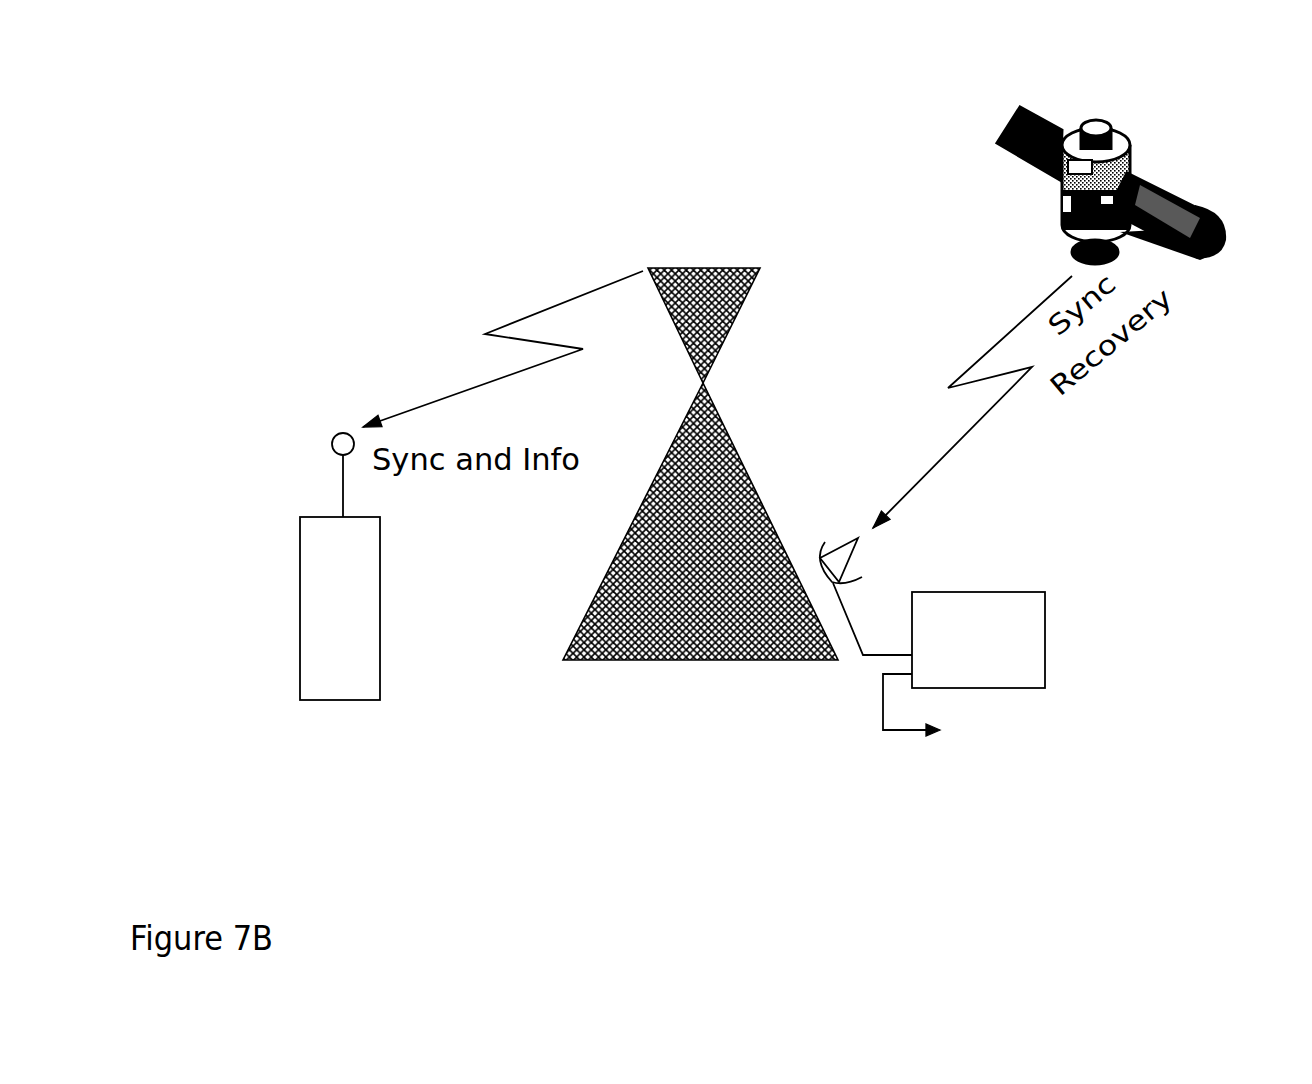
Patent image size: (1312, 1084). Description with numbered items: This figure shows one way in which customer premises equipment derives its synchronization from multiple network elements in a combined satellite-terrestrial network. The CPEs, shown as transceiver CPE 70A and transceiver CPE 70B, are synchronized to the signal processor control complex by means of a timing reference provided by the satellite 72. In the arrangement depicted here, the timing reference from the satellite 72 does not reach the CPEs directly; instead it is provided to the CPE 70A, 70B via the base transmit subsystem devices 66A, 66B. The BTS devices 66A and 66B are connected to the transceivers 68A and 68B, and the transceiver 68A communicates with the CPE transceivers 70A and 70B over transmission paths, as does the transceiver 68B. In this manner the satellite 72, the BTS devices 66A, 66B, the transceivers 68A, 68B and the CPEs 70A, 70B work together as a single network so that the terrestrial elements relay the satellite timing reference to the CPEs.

The satellite 72 is at (1177, 200).
The transceiver 68A is at (755, 464).
The transceiver 68B is at (763, 305).
The transceiver CPE 70A is at (250, 566).
The transceiver CPE 70B is at (300, 700).
The base transmit subsystem (BTS) device 66A is at (1036, 651).
The base transmit subsystem (BTS) device 66B is at (1045, 592).